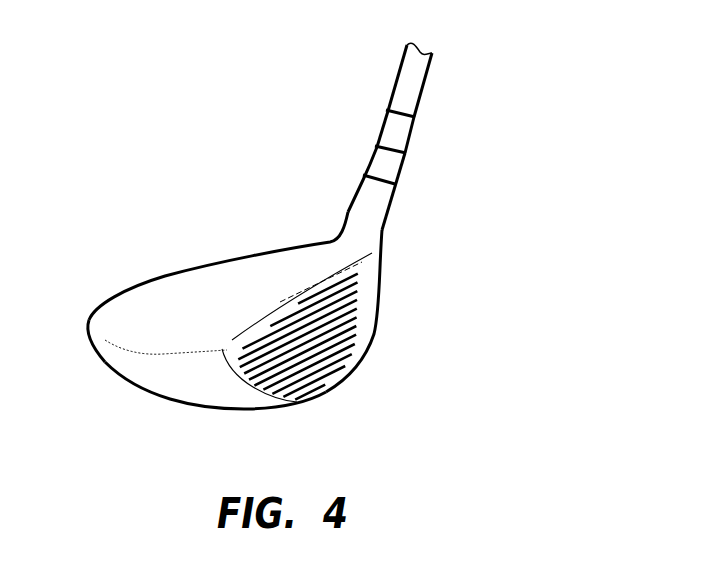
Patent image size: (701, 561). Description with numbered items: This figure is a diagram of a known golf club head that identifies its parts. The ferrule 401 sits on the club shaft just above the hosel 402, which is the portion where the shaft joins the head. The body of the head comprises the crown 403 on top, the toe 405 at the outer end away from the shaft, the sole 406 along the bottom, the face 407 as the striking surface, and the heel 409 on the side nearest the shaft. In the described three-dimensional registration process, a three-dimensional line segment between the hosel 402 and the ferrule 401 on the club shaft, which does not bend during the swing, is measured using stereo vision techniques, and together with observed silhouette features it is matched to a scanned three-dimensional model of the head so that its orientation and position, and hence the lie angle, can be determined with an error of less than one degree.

The ferrule 401 is at (407, 138).
The hosel 402 is at (373, 163).
The crown 403 is at (167, 296).
The toe 405 is at (227, 352).
The sole 406 is at (263, 409).
The face 407 is at (340, 349).
The heel 409 is at (370, 329).